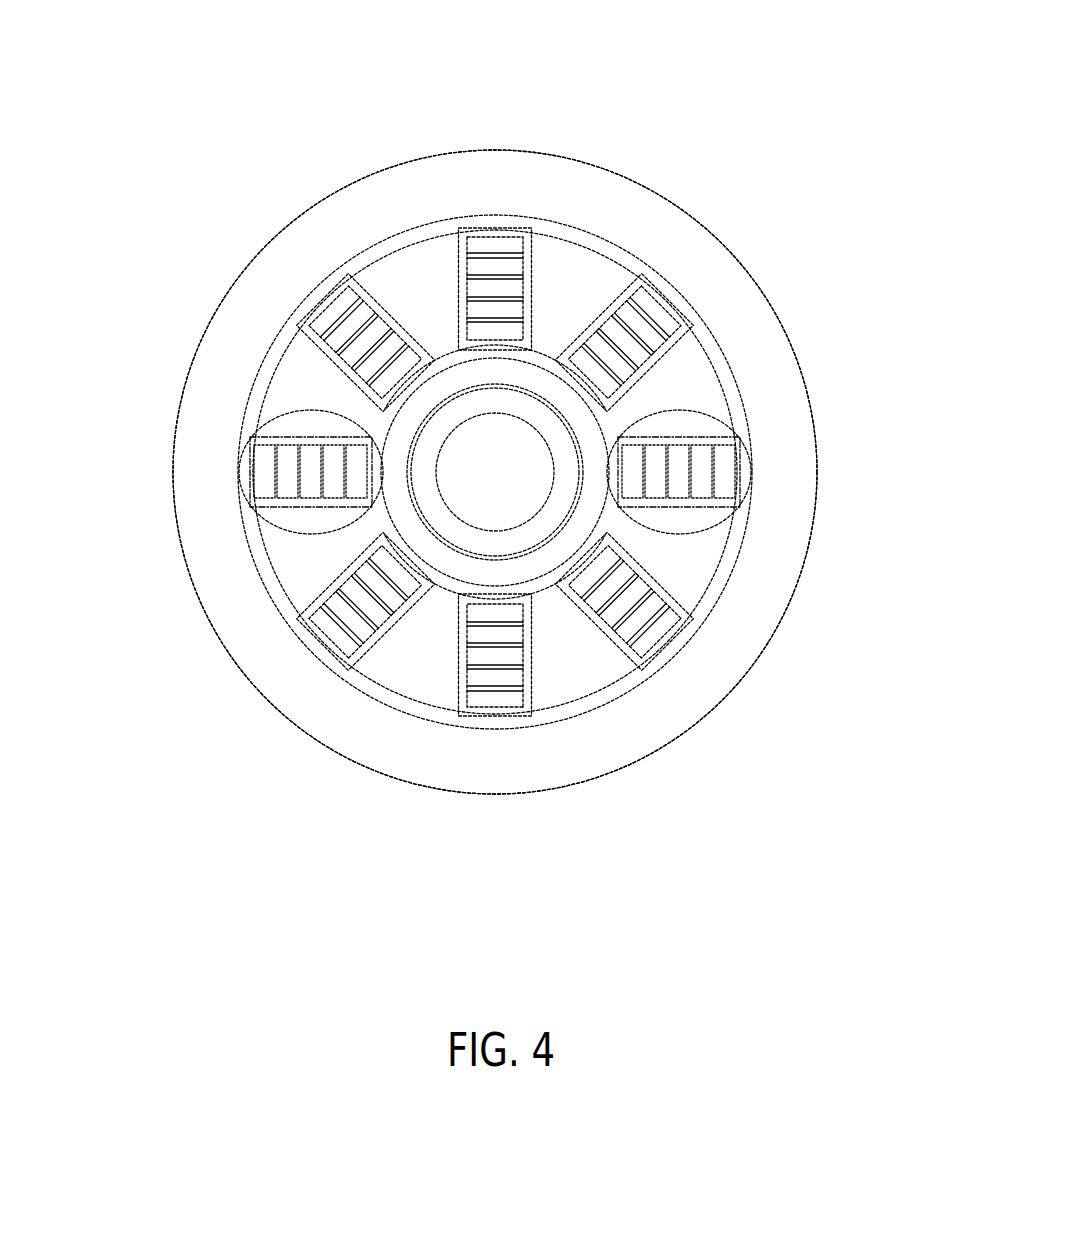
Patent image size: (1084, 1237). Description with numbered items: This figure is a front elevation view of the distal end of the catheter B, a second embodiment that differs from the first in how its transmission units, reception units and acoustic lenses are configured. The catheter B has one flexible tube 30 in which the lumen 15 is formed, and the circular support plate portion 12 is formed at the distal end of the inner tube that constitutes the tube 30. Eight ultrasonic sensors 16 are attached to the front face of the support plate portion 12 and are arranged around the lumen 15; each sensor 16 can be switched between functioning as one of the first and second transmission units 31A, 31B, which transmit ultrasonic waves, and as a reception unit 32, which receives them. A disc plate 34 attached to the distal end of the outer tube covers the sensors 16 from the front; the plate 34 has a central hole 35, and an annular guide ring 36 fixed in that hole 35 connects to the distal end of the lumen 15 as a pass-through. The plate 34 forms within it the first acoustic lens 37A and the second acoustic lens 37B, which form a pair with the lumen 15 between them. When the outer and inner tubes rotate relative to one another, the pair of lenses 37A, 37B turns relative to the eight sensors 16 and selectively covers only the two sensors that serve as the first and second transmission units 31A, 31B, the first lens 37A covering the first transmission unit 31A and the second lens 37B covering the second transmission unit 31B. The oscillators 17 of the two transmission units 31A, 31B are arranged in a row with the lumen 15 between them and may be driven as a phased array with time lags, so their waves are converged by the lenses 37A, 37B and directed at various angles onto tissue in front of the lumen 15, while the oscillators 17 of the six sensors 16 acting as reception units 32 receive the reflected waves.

The catheter B is at (741, 97).
The tube 30 is at (797, 245).
The support plate portion 12 is at (682, 383).
The lumen 15 is at (465, 528).
The ultrasonic sensor 16 is at (378, 362).
The oscillator 17 is at (512, 308).
The first transmission unit 31A is at (283, 421).
The second transmission unit 31B is at (697, 517).
The reception unit 32 is at (487, 207).
The plate 34 is at (295, 367).
The central hole 35 is at (583, 553).
The guide ring 36 is at (340, 645).
The first acoustic lens 37A is at (300, 532).
The second acoustic lens 37B is at (698, 430).